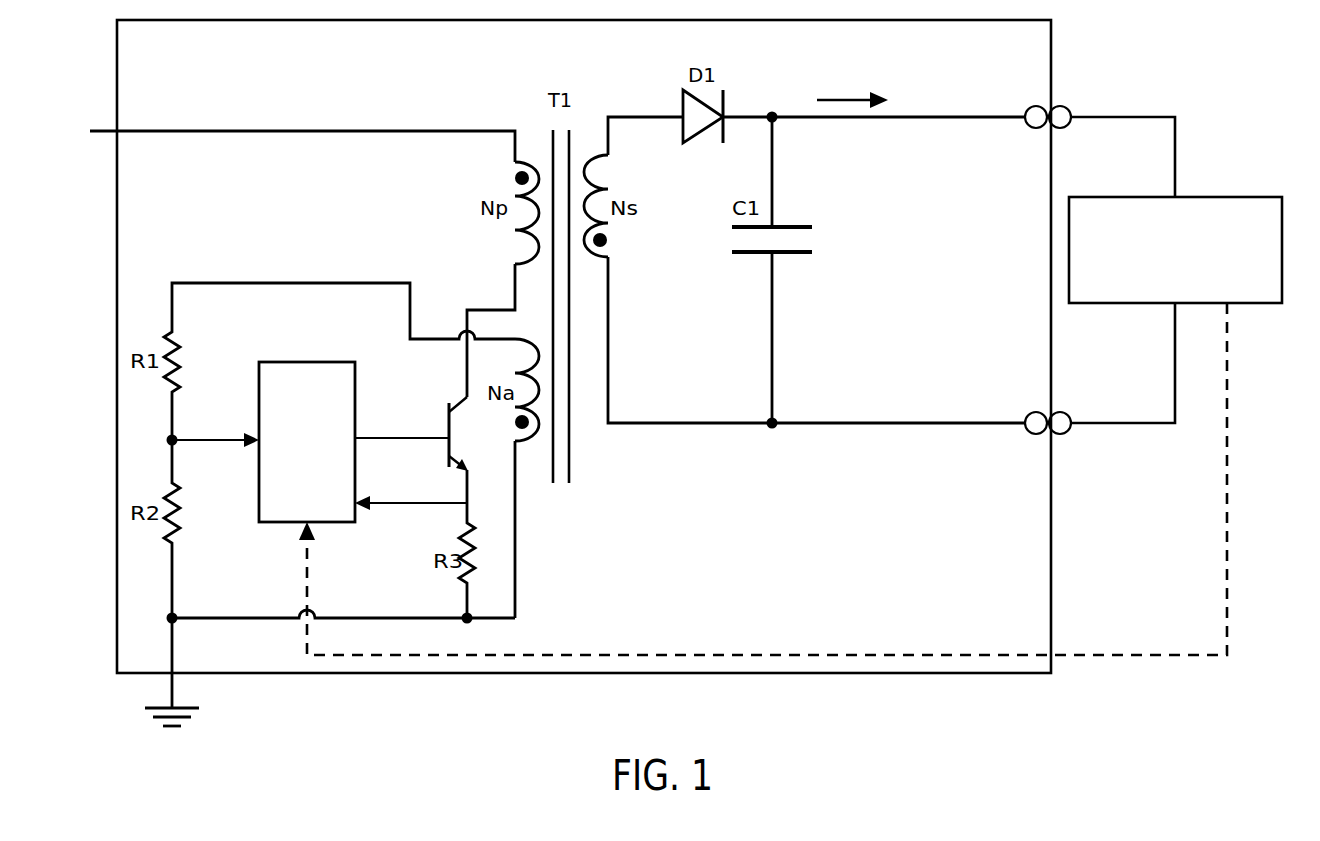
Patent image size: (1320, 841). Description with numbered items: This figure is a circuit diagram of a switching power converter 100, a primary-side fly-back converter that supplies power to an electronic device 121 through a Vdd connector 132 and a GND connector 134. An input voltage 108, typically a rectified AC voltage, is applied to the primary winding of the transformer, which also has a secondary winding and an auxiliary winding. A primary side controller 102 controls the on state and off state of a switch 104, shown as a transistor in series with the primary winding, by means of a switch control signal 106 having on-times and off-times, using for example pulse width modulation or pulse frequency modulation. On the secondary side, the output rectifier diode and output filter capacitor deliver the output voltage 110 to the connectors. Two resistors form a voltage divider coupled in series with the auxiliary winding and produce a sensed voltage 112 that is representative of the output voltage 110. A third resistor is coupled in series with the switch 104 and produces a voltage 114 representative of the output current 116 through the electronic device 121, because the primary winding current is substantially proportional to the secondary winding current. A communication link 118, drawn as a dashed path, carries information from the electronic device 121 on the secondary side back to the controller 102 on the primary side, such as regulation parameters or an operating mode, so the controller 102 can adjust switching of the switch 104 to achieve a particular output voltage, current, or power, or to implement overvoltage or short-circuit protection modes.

The switching power converter 100 is at (178, 60).
The primary side controller 102 is at (291, 492).
The switch 104 is at (446, 422).
The switch control signal 106 is at (384, 436).
The input voltage 108 is at (116, 130).
The output voltage 110 is at (960, 89).
The sensed voltage 112 is at (212, 438).
The sensed current voltage 114 is at (404, 502).
The output current 116 is at (851, 83).
The communication link 118 is at (610, 653).
The electronic device 121 is at (1157, 275).
The Vdd connector 132 is at (1060, 107).
The GND connector 134 is at (1064, 436).